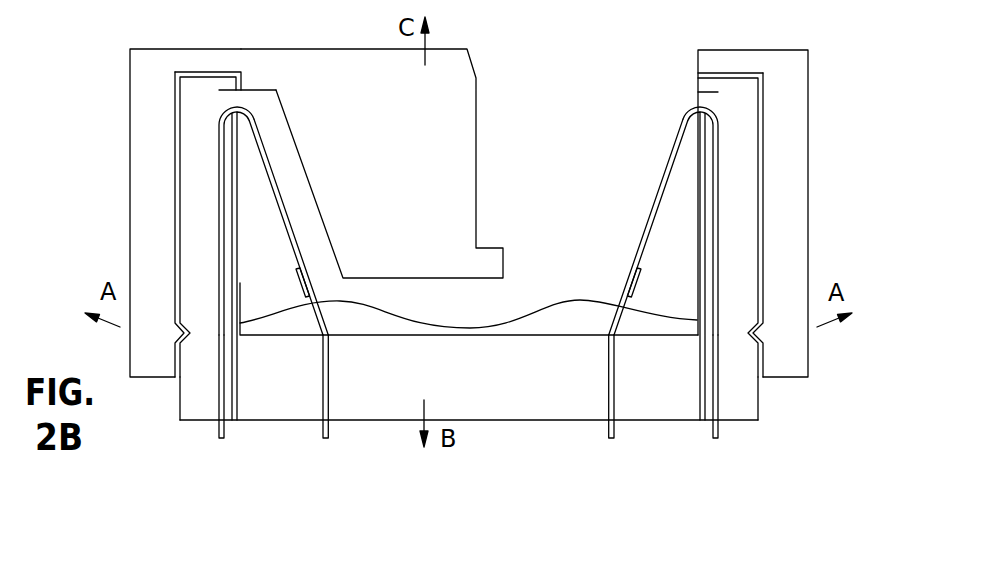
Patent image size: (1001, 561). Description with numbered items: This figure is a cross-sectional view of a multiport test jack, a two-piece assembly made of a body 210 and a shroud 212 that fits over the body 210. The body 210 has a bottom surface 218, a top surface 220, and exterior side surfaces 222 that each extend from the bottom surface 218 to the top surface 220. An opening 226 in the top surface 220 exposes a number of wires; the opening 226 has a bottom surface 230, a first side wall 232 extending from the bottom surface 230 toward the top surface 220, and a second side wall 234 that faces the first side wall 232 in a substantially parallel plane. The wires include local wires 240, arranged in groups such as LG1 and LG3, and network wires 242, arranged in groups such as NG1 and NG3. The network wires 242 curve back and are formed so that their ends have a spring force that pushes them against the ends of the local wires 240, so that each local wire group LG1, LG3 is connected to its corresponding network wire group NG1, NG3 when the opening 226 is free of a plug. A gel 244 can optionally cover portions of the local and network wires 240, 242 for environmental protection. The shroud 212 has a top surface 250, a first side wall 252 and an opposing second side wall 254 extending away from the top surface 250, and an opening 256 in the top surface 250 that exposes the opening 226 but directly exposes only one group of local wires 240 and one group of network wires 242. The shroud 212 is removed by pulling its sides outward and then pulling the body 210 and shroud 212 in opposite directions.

The body 210 is at (288, 410).
The shroud 212 is at (143, 185).
The bottom surface 218 is at (193, 421).
The top surface 220 is at (218, 77).
The exterior side surfaces 222 is at (180, 132).
The opening 226 is at (527, 318).
The bottom surface 230 is at (378, 332).
The first side wall 232 is at (307, 263).
The second side wall 234 is at (645, 263).
The local wires 240 is at (330, 402).
The network wires 242 is at (227, 377).
The gel 244 is at (228, 98).
The top surface 250 is at (460, 191).
The first side wall 252 is at (130, 88).
The second side wall 254 is at (810, 133).
The opening 256 is at (599, 52).
The group of network wires NG1 is at (288, 218).
The group of network wires NG3 is at (660, 187).
The group of local wires LG1 is at (322, 312).
The group of local wires LG3 is at (612, 313).